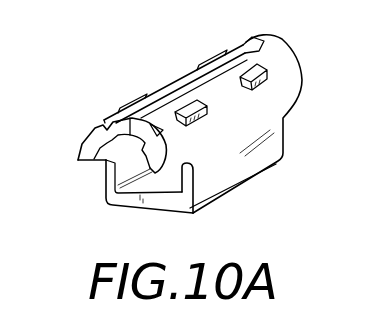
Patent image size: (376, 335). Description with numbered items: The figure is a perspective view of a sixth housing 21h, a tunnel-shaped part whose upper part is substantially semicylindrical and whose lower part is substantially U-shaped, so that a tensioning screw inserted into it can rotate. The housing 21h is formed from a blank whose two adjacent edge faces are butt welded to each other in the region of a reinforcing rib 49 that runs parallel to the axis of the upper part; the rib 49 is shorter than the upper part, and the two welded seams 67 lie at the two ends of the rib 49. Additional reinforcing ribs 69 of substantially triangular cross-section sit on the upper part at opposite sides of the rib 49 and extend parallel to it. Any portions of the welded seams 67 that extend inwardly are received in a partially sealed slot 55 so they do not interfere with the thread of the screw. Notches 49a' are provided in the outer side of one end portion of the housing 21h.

The housing 21h is at (273, 120).
The reinforcing rib 49 is at (262, 50).
The notches 49a' is at (140, 145).
The partially sealed slot 55 is at (191, 84).
The welded seams 67 is at (244, 42).
The additional reinforcing ribs 69 is at (122, 108).